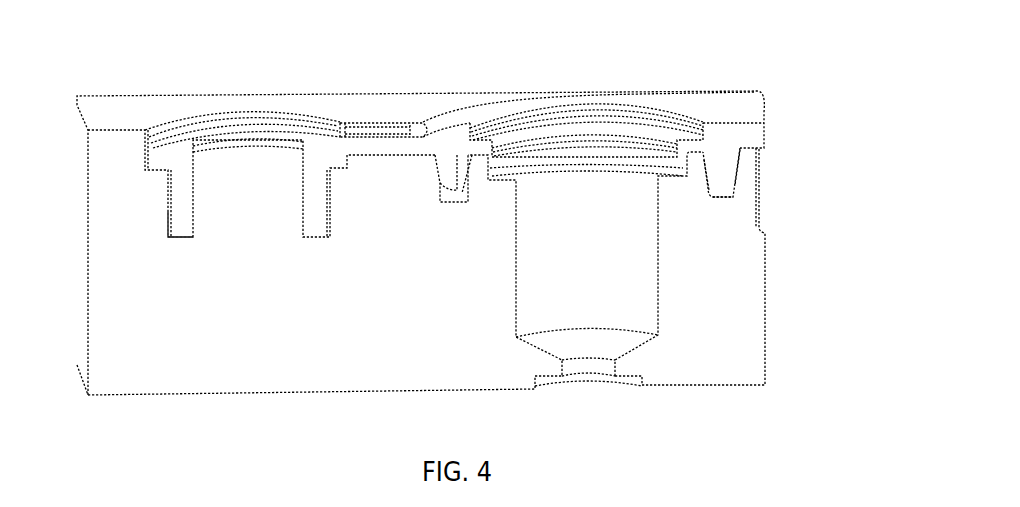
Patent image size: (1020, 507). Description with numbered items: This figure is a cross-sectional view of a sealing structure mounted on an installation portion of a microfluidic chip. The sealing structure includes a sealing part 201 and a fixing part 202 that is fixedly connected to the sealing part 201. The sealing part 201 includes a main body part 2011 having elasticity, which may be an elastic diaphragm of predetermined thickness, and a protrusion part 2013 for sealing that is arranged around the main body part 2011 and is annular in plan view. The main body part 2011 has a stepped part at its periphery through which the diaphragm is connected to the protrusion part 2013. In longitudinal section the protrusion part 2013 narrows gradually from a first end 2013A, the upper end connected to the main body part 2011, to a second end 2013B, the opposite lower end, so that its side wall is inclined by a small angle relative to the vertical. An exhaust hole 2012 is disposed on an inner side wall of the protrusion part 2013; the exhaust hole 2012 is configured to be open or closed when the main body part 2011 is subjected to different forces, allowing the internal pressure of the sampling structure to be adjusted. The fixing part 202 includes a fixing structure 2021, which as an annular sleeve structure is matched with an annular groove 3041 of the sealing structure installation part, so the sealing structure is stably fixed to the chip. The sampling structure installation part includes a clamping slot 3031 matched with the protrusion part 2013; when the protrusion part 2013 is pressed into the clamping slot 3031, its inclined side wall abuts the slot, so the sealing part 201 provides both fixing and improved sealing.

The sealing part 201 is at (733, 113).
The fixing part 202 is at (177, 135).
The main body part 2011 is at (590, 150).
The exhaust hole 2012 is at (465, 157).
The protrusion part 2013 is at (718, 188).
The first end of the protrusion part 2013A is at (727, 173).
The second end of the protrusion part 2013B is at (718, 188).
The fixing structure 2021 is at (177, 209).
The clamping slot 3031 is at (732, 198).
The annular groove 3041 is at (168, 219).